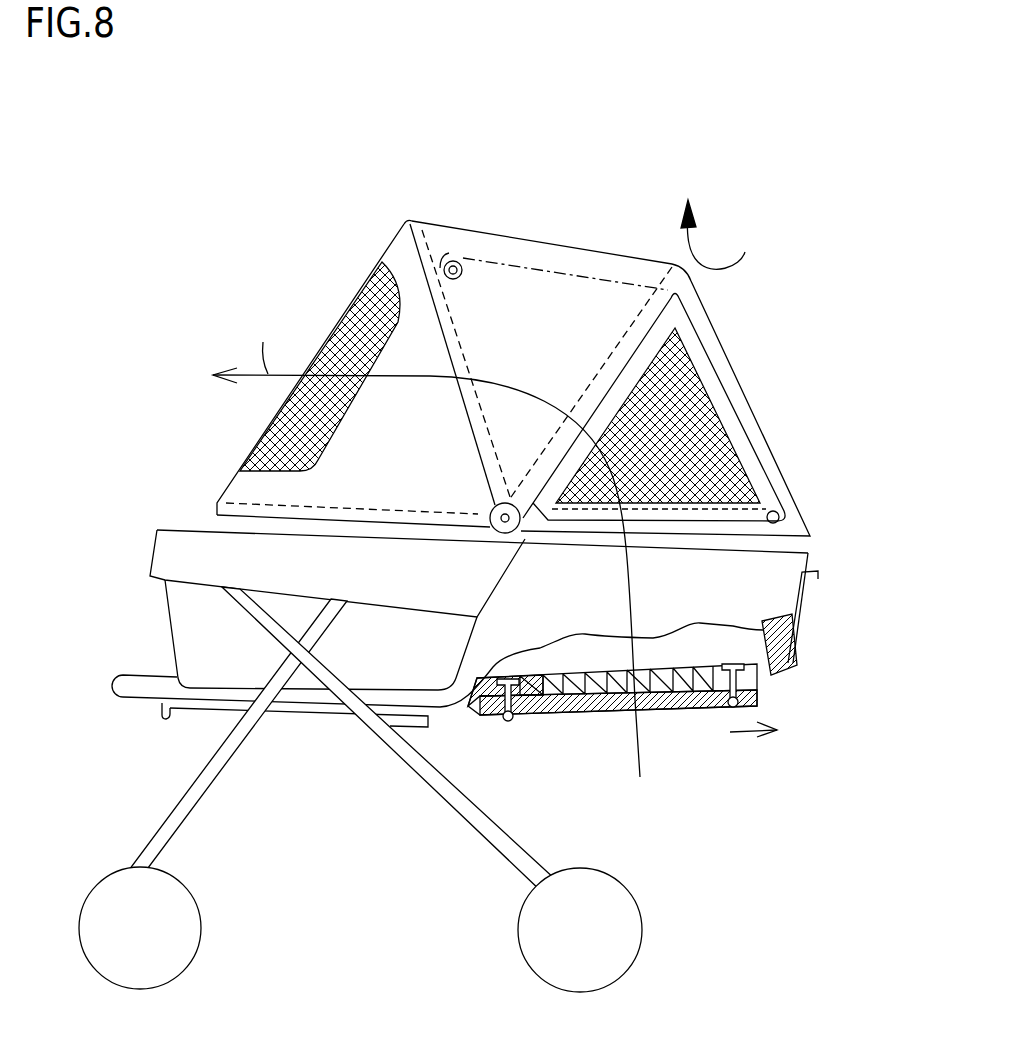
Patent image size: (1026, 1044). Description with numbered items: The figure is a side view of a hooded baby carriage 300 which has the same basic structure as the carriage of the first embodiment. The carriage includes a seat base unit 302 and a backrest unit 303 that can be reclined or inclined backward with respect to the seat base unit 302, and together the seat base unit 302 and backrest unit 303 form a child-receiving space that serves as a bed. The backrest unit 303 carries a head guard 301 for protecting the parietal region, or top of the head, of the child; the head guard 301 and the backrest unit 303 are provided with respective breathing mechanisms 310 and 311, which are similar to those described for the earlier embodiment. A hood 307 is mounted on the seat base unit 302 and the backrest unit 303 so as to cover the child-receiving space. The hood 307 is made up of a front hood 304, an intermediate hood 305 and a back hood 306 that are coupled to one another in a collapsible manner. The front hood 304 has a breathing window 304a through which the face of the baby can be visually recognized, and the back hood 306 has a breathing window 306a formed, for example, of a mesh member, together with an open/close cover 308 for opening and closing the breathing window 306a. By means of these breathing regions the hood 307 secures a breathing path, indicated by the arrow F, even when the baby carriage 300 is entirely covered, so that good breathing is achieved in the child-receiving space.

The baby carriage 300 is at (170, 210).
The head guard 301 is at (728, 590).
The seat base unit 302 is at (182, 648).
The backrest unit 303 is at (757, 592).
The front hood 304 is at (400, 257).
The breathing window 304a is at (362, 305).
The intermediate hood 305 is at (527, 255).
The back hood 306 is at (692, 293).
The breathing window 306a is at (717, 463).
The hood 307 is at (607, 164).
The open/close cover 308 is at (750, 433).
The breathing mechanism 310 is at (596, 708).
The breathing mechanism 311 is at (792, 630).